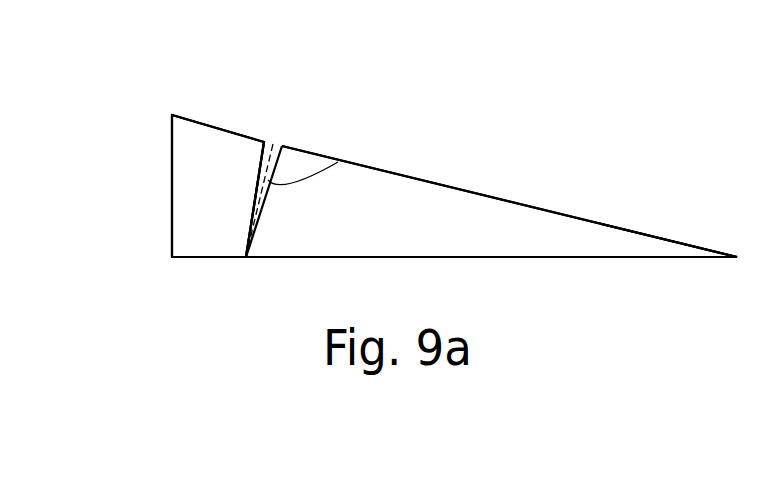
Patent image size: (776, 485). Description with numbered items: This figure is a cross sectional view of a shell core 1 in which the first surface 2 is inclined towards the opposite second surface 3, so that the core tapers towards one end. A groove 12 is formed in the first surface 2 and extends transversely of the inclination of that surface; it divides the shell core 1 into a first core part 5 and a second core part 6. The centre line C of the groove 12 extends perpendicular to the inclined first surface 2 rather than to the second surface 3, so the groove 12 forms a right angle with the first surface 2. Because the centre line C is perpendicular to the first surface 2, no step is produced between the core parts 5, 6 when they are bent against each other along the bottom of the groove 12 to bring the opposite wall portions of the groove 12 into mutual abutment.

The shell core 1 is at (529, 158).
The first surface 2 is at (398, 168).
The second surface 3 is at (515, 258).
The first core part 5 is at (227, 120).
The second core part 6 is at (607, 205).
The groove 12 is at (280, 143).
The centre line C is at (277, 143).